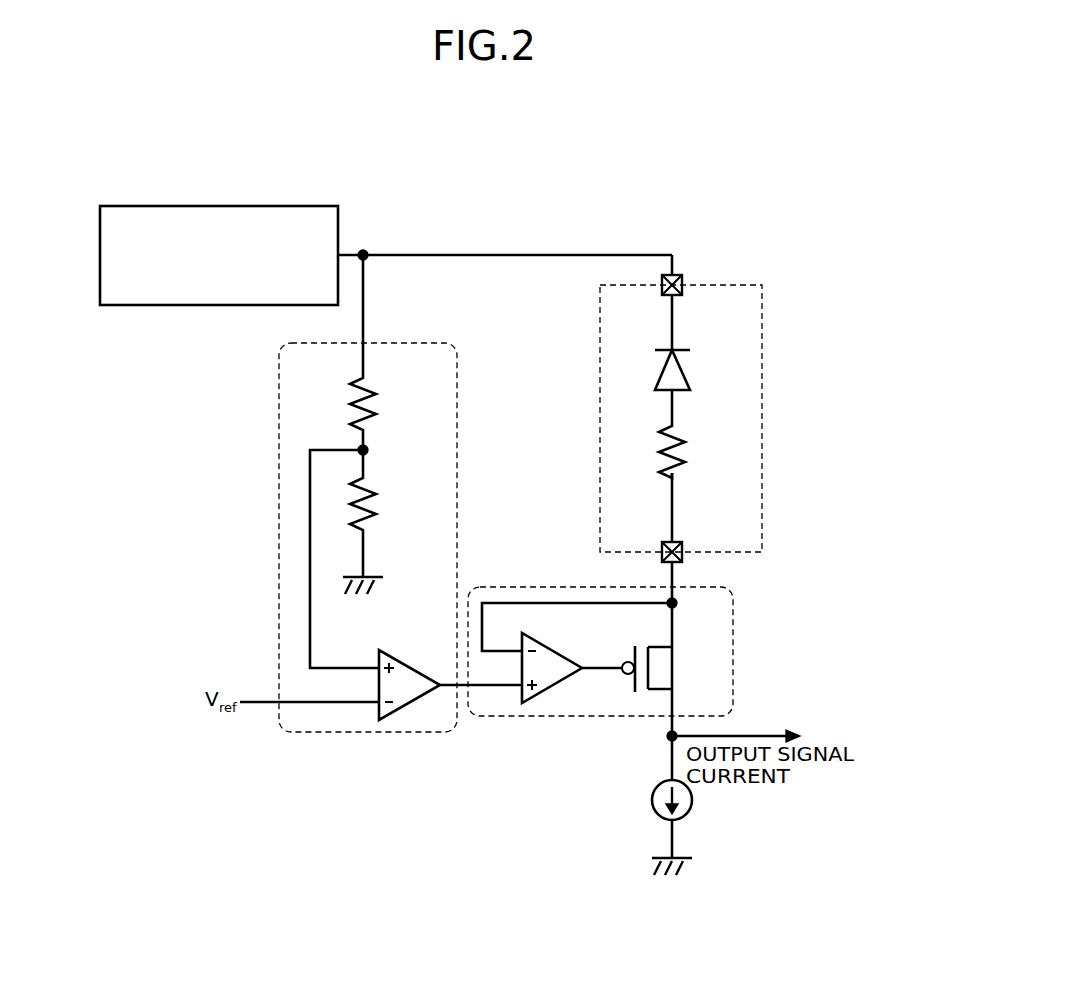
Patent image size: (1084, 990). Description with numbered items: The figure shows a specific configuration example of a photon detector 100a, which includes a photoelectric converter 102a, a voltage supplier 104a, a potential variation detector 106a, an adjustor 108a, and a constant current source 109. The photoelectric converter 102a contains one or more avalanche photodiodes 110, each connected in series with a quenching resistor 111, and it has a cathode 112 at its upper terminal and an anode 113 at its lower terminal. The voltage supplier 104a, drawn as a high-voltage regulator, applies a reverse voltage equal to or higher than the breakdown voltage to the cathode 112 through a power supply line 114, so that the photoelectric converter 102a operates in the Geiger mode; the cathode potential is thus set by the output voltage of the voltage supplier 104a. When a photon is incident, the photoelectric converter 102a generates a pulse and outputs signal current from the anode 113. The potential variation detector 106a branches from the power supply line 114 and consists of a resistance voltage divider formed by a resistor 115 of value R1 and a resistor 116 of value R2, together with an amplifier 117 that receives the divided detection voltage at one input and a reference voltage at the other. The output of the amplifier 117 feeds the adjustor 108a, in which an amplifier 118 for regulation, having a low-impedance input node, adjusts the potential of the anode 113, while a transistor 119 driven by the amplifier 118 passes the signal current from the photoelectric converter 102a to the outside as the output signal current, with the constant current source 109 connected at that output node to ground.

The photon detector 100a is at (682, 172).
The photoelectric converter 102a is at (762, 332).
The voltage supplier 104a is at (274, 206).
The potential variation detector 106a is at (277, 423).
The adjustor 108a is at (733, 627).
The constant current source 109 is at (693, 801).
The avalanche photodiode 110 is at (688, 371).
The quenching resistor 111 is at (686, 444).
The cathode 112 is at (678, 275).
The anode 113 is at (678, 542).
The power supply line 114 is at (511, 252).
The resistor 115 is at (377, 399).
The resistor 116 is at (377, 497).
The amplifier 117 is at (408, 654).
The amplifier 118 is at (548, 648).
The transistor 119 is at (632, 684).